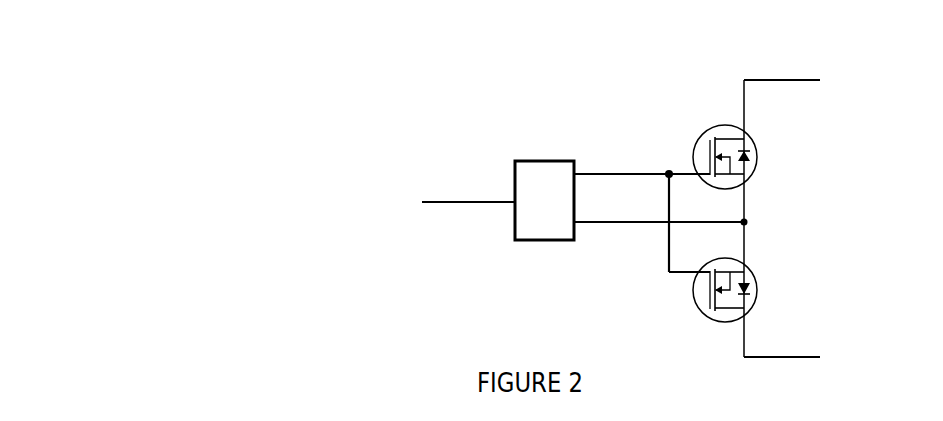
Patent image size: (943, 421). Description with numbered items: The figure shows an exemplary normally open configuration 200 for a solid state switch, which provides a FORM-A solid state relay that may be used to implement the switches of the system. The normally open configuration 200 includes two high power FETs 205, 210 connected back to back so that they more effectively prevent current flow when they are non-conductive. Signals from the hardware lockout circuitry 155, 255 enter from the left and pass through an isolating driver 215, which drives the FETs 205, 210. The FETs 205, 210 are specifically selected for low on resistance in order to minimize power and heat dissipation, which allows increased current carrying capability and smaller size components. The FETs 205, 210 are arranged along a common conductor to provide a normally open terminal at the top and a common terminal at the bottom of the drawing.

The normally open configuration 200 is at (539, 61).
The hardware lockout circuitry 155 is at (266, 202).
The hardware lockout circuitry 255 is at (266, 202).
The isolating driver 215 is at (544, 200).
The high power FET 205 is at (757, 161).
The high power FET 210 is at (757, 272).